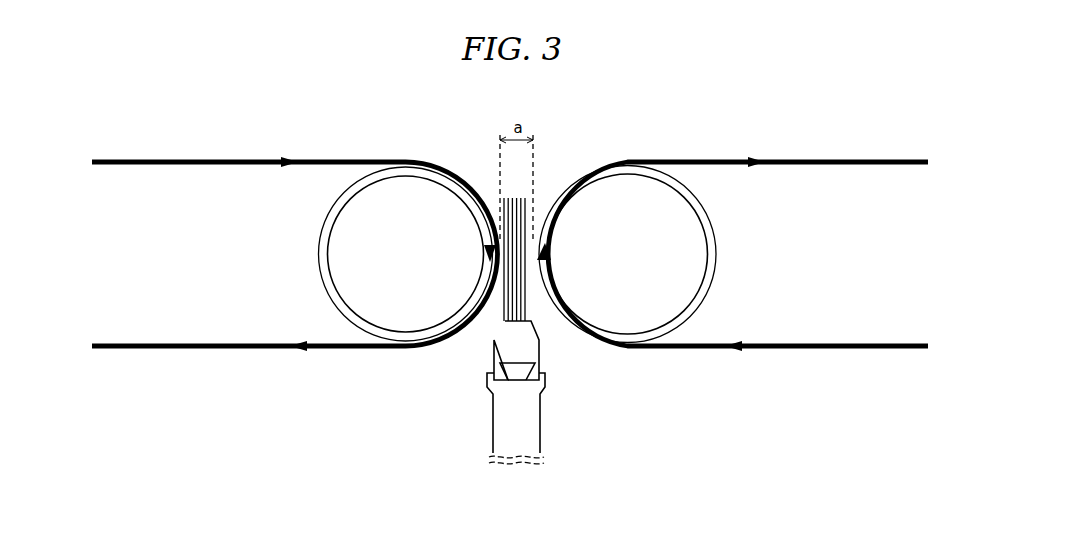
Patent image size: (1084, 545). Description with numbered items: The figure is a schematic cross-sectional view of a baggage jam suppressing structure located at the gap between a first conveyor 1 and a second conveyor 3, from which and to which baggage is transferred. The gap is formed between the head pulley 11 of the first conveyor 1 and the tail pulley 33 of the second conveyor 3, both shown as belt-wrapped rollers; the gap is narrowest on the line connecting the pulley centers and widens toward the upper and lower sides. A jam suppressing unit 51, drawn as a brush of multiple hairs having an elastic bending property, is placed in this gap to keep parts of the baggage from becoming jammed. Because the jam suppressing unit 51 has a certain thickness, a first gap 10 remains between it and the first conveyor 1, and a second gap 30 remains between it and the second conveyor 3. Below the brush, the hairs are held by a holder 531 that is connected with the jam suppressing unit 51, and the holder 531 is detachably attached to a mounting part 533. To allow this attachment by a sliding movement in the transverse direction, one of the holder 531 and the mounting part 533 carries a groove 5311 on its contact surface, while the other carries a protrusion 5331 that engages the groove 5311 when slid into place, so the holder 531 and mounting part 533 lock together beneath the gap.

The first conveyor 1 is at (137, 366).
The second conveyor 3 is at (810, 368).
The first gap 10 is at (490, 200).
The second gap 30 is at (540, 200).
The head pulley 11 is at (318, 253).
The tail pulley 33 is at (717, 253).
The jam suppressing unit 51 is at (505, 313).
The holder 531 is at (507, 342).
The protrusion 5331 is at (533, 372).
The groove 5311 is at (520, 366).
The mounting part 533 is at (528, 425).